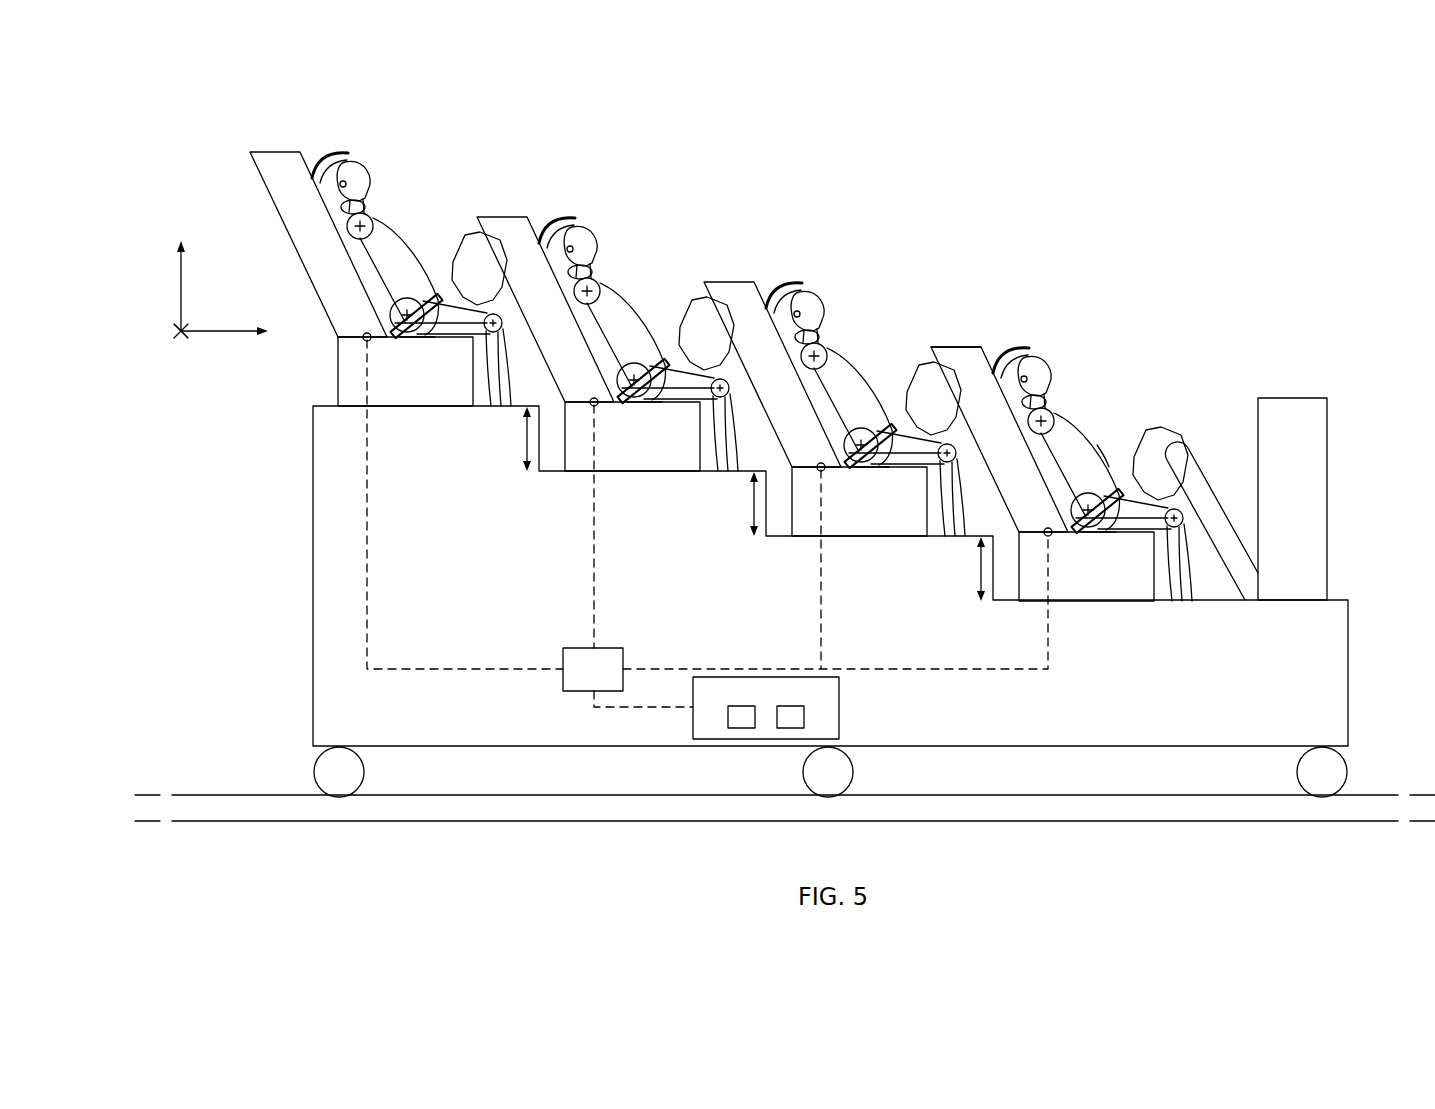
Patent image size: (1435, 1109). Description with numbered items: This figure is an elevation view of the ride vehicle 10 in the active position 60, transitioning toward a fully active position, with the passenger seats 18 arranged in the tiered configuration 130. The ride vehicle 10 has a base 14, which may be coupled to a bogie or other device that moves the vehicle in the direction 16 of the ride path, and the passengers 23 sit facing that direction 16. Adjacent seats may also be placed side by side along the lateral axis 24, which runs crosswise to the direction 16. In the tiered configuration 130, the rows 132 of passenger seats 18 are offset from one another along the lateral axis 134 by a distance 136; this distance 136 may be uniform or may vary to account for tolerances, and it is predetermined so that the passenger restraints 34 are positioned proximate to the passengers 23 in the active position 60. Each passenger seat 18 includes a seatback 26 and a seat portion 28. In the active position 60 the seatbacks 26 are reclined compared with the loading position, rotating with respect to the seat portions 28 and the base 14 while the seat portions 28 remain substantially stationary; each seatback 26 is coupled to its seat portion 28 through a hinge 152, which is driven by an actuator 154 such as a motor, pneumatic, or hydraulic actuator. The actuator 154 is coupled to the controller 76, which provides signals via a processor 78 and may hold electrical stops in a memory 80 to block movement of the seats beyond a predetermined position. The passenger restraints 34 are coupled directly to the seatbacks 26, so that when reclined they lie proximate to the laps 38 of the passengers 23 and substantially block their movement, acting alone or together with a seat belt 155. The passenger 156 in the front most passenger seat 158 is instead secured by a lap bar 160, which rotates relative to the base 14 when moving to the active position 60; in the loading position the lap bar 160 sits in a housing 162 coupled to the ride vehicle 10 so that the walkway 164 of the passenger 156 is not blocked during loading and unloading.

The ride vehicle 10 is at (1170, 224).
The base 14 is at (1348, 673).
The direction 16 is at (218, 333).
The passenger seats 18 is at (287, 162).
The passengers 23 is at (387, 237).
The lateral axis 24 is at (182, 340).
The seatback 26 is at (333, 160).
The seat portion 28 is at (423, 339).
The passenger restraint 34 is at (470, 233).
The laps 38 is at (445, 289).
The active position 60 is at (274, 135).
The controller 76 is at (768, 732).
The processor 78 is at (728, 713).
The memory 80 is at (793, 729).
The tiered configuration 130 is at (923, 222).
The rows 132 is at (790, 334).
The lateral axis 134 is at (180, 292).
The distance 136 is at (525, 442).
The hinge 152 is at (365, 336).
The actuator 154 is at (563, 648).
The seat belt 155 is at (417, 340).
The passenger 156 is at (1088, 440).
The front most passenger seat 158 is at (942, 350).
The lap bar 160 is at (1200, 490).
The housing 162 is at (1300, 398).
The walkway 164 is at (1275, 463).